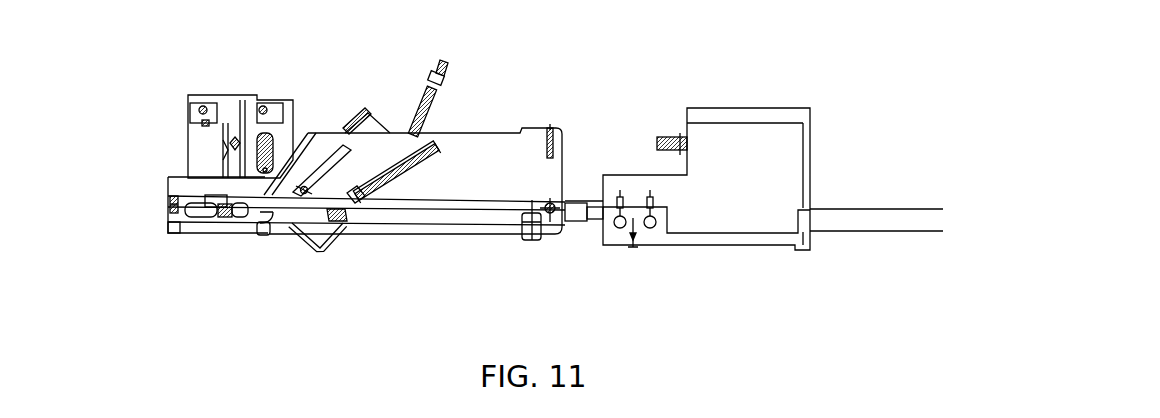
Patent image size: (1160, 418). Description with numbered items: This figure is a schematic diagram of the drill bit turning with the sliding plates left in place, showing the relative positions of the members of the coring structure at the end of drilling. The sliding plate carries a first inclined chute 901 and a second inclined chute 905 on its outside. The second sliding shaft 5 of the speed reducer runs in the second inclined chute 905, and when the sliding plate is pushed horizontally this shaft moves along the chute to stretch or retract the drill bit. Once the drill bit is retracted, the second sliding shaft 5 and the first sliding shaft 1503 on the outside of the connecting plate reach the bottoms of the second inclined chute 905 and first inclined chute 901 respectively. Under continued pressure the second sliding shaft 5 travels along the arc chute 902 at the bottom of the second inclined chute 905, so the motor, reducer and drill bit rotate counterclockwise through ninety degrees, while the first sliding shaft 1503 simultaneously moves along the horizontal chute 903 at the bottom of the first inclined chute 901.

The first sliding shaft 1503 is at (215, 200).
The horizontal chute 903 is at (227, 213).
The first inclined chute 901 is at (345, 148).
The arc chute 902 is at (307, 187).
The second inclined chute 905 is at (433, 150).
The second sliding shaft 5 is at (333, 215).